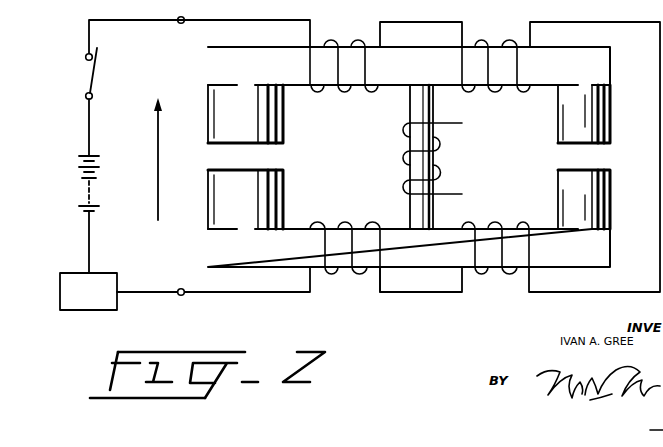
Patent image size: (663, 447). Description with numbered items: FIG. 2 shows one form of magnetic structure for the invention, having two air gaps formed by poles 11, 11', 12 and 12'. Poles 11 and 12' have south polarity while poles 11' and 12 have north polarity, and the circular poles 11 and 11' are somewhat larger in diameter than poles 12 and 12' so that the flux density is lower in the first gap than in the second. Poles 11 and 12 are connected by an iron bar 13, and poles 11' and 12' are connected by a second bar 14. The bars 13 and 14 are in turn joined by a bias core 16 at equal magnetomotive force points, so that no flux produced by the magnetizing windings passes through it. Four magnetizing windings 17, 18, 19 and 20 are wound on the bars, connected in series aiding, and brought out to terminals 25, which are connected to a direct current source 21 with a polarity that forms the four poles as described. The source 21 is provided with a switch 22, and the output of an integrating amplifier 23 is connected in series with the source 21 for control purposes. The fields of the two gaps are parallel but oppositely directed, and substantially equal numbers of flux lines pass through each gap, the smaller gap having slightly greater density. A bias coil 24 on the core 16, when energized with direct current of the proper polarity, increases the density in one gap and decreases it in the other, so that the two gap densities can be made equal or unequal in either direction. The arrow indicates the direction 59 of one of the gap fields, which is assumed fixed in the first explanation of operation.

The pole 11 is at (231, 117).
The pole 11' is at (231, 196).
The pole 12 is at (599, 117).
The pole 12' is at (601, 198).
The iron bar 13 is at (417, 47).
The second bar 14 is at (410, 268).
The bias core 16 is at (412, 108).
The magnetizing winding 17 is at (318, 92).
The magnetizing winding 18 is at (523, 92).
The magnetizing winding 19 is at (527, 208).
The magnetizing winding 20 is at (320, 222).
The direct current source 21 is at (97, 178).
The switch 22 is at (95, 72).
The integrating amplifier 23 is at (105, 273).
The bias coil 24 is at (402, 157).
The terminals 25 is at (178, 23).
The direction 59 is at (156, 129).